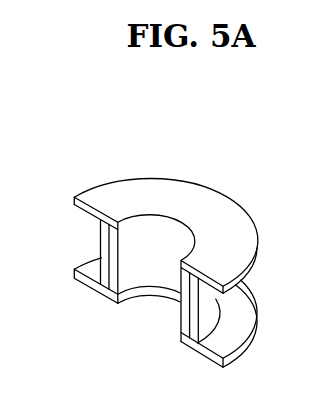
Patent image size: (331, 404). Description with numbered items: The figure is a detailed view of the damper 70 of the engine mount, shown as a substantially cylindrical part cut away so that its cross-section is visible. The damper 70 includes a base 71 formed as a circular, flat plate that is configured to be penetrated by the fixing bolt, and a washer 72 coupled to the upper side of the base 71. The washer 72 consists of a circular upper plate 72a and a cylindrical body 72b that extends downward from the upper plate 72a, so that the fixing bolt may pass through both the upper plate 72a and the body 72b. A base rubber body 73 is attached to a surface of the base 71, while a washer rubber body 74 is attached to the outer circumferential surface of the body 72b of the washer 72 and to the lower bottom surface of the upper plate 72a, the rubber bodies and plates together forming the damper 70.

The damper 70 is at (213, 158).
The base 71 is at (203, 350).
The washer 72 is at (215, 220).
The upper plate 72a is at (77, 208).
The body 72b is at (117, 262).
The base rubber body 73 is at (236, 313).
The washer rubber body 74 is at (104, 245).